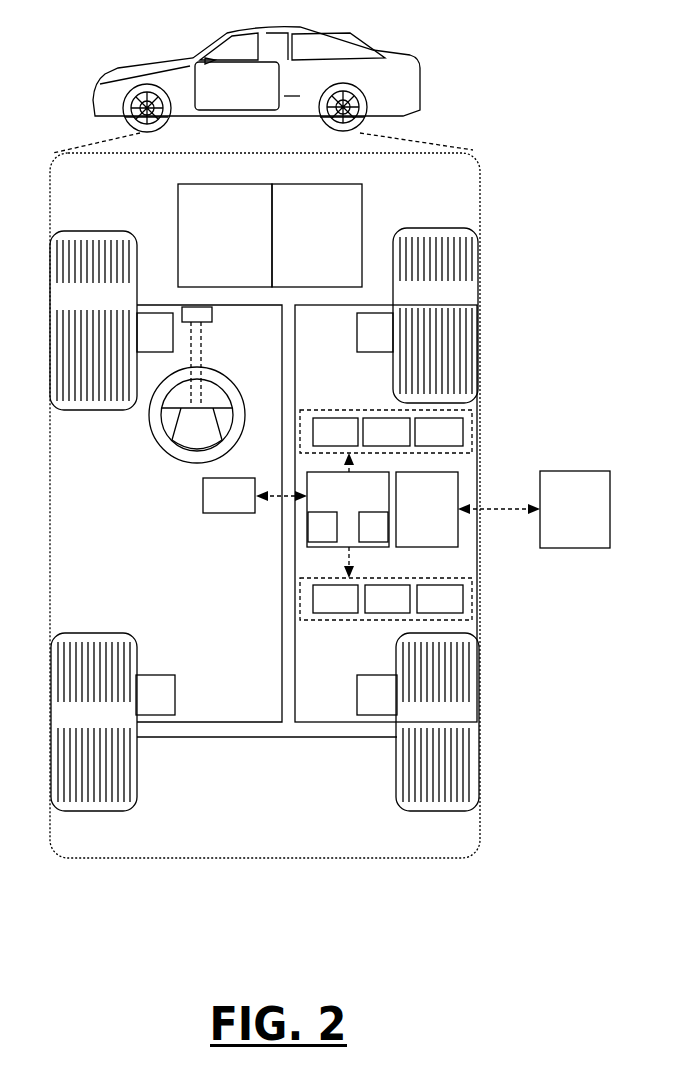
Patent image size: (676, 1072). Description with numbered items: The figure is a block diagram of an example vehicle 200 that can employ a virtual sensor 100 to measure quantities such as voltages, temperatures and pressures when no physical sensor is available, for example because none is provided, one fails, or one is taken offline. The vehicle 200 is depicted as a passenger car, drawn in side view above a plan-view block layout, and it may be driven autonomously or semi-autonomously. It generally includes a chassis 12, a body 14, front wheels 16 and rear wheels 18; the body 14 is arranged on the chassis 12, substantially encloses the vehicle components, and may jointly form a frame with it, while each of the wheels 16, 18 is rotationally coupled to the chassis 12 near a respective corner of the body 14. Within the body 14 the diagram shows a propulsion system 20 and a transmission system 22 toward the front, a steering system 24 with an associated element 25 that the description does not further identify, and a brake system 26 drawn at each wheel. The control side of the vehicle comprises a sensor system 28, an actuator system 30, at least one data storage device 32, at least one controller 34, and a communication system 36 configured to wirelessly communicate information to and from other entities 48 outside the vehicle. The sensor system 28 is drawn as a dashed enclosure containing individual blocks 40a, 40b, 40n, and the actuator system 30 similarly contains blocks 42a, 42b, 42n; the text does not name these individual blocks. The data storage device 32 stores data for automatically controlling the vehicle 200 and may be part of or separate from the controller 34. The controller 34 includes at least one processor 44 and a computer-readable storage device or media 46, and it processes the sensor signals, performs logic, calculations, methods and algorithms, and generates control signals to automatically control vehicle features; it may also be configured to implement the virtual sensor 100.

The vehicle 200 is at (100, 68).
The virtual sensor 100 is at (512, 348).
The body 14 is at (50, 470).
The chassis 12 is at (289, 738).
The front wheels 16 is at (84, 305).
The rear wheels 18 is at (85, 724).
The propulsion system 20 is at (216, 244).
The transmission system 22 is at (308, 244).
The steering system 24 is at (165, 478).
The steering wheel 25 is at (232, 369).
The brake system 26 is at (146, 341).
The sensor system 28 is at (343, 410).
The actuator system 30 is at (329, 622).
The data storage device 32 is at (220, 503).
The controller 34 is at (339, 503).
The communication system 36 is at (418, 517).
The sensor 40a is at (349, 441).
The sensor 40b is at (400, 441).
The sensor 40n is at (453, 441).
The actuator 42a is at (349, 608).
The actuator 42b is at (401, 608).
The actuator 42n is at (454, 608).
The processor 44 is at (313, 535).
The computer-readable storage device or media 46 is at (364, 535).
The other entities 48 is at (566, 517).